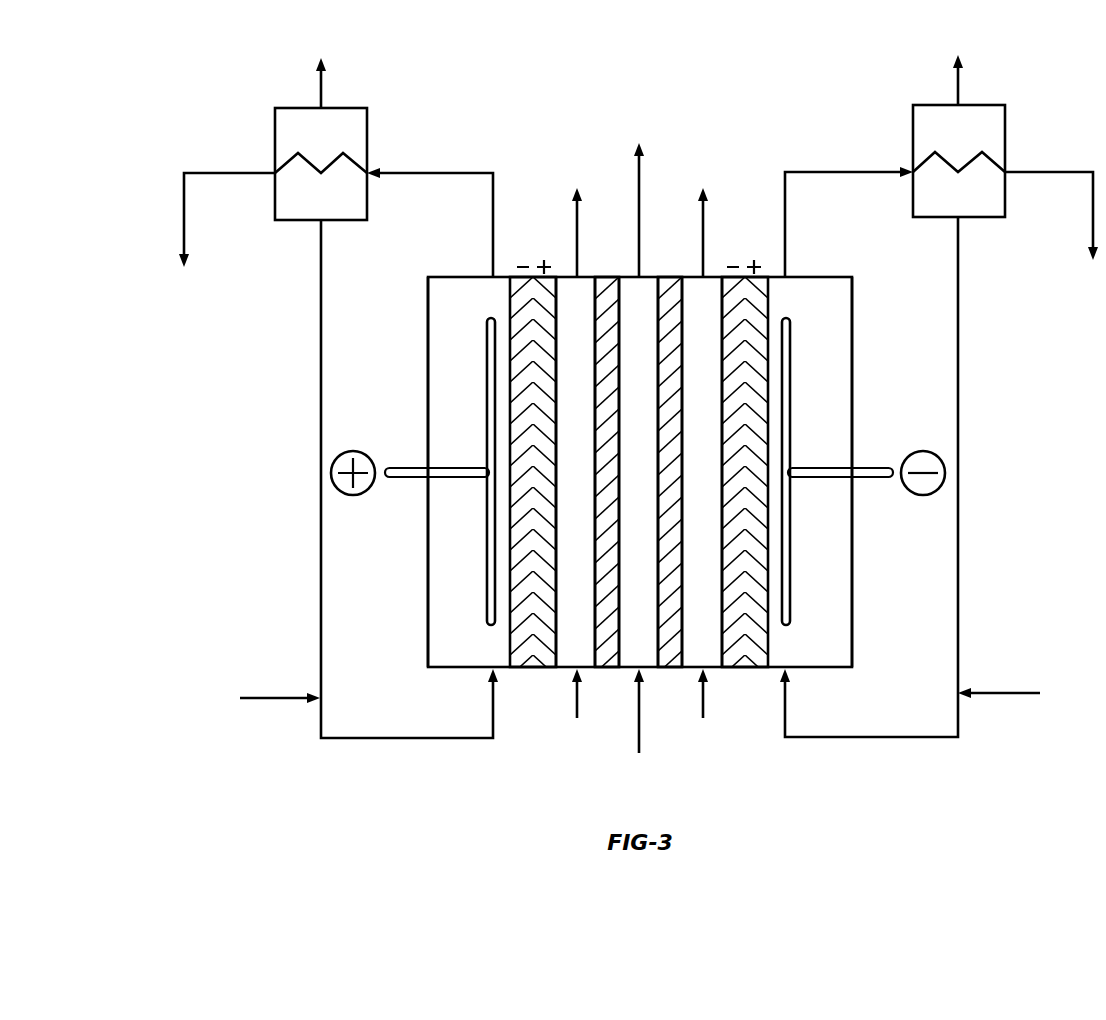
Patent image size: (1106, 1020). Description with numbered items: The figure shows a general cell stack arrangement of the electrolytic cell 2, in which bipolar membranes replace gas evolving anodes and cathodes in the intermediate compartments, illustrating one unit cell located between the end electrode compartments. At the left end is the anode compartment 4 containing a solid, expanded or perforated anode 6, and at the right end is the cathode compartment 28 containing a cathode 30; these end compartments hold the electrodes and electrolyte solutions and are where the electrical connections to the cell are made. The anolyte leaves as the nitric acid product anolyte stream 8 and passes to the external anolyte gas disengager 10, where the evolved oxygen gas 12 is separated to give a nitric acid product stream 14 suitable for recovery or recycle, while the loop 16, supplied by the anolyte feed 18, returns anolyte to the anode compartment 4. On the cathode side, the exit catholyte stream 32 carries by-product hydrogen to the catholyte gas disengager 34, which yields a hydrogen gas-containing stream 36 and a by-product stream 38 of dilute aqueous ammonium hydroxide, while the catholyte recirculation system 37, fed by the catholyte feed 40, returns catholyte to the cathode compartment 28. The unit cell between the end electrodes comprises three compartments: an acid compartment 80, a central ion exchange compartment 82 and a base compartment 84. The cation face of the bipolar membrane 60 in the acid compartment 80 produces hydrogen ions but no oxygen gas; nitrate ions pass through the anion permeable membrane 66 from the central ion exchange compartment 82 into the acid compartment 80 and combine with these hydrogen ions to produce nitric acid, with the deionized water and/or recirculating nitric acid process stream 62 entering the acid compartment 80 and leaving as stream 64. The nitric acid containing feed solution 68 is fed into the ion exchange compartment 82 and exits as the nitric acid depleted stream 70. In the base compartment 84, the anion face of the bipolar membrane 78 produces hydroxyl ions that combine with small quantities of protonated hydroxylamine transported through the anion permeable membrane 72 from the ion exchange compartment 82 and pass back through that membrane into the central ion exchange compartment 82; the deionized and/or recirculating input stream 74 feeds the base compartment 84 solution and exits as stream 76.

The electrolytic cell 2 is at (410, 660).
The anolyte compartment 4 is at (443, 567).
The anode 6 is at (485, 382).
The nitric acid product anolyte stream 8 is at (493, 212).
The anolyte gas disengager 10 is at (275, 198).
The oxygen gas 12 is at (321, 68).
The nitric acid product stream 14 is at (223, 238).
The loop 16 is at (320, 405).
The anolyte feed 18 is at (262, 698).
The catholyte compartment 28 is at (830, 600).
The cathode 30 is at (790, 395).
The exit catholyte stream 32 is at (785, 210).
The catholyte gas disengager 34 is at (1007, 197).
The hydrogen gas-containing stream 36 is at (958, 65).
The catholyte recirculation system 37 is at (958, 597).
The by-product stream 38 is at (1054, 236).
The catholyte feed 40 is at (1018, 693).
The bipolar membrane 60 is at (533, 667).
The process stream 62 is at (577, 710).
The exit stream 64 is at (576, 218).
The anion permeable membrane 66 is at (607, 277).
The nitric acid containing feed solution 68 is at (639, 728).
The nitric acid depleted stream 70 is at (639, 195).
The anion permeable membrane 72 is at (669, 277).
The input stream 74 is at (703, 710).
The exit stream 76 is at (703, 218).
The bipolar membrane 78 is at (745, 667).
The acid compartment 80 is at (560, 501).
The central ion exchange compartment 82 is at (625, 496).
The base compartment 84 is at (688, 496).